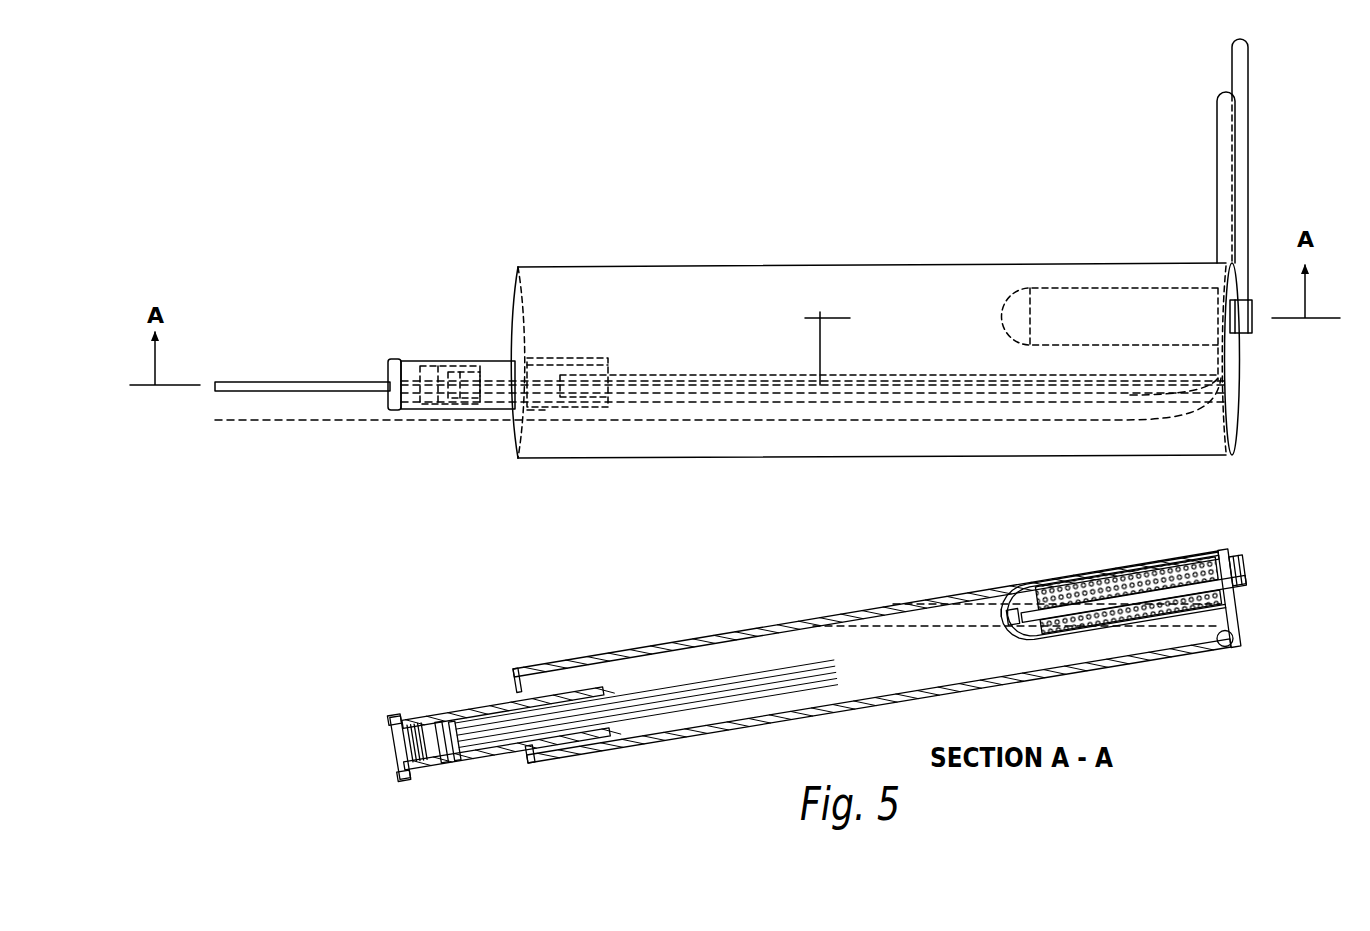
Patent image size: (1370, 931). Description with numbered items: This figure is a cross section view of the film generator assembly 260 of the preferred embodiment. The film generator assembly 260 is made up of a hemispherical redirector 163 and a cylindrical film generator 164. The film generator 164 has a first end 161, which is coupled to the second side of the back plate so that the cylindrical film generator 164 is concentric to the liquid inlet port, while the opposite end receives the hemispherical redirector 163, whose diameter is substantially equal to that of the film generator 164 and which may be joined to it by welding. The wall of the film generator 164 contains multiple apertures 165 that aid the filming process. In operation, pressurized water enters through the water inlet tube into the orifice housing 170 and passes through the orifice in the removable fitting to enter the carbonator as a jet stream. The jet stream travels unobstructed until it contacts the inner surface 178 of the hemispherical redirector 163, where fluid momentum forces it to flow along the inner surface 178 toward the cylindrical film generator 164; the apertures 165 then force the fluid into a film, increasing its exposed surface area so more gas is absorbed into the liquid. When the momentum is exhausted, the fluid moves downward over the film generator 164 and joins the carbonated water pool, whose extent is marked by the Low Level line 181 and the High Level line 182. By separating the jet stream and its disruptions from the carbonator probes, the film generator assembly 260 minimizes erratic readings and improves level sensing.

The first end 161 is at (1222, 556).
The hemispherical redirector 163 is at (1008, 627).
The cylindrical film generator 164 is at (1068, 640).
The apertures 165 is at (1105, 582).
The orifice housing 170 is at (1232, 604).
The inner surface 178 is at (1017, 630).
The Low Level line 181 is at (918, 622).
The High Level line 182 is at (965, 600).
The film generator assembly 260 is at (1198, 683).